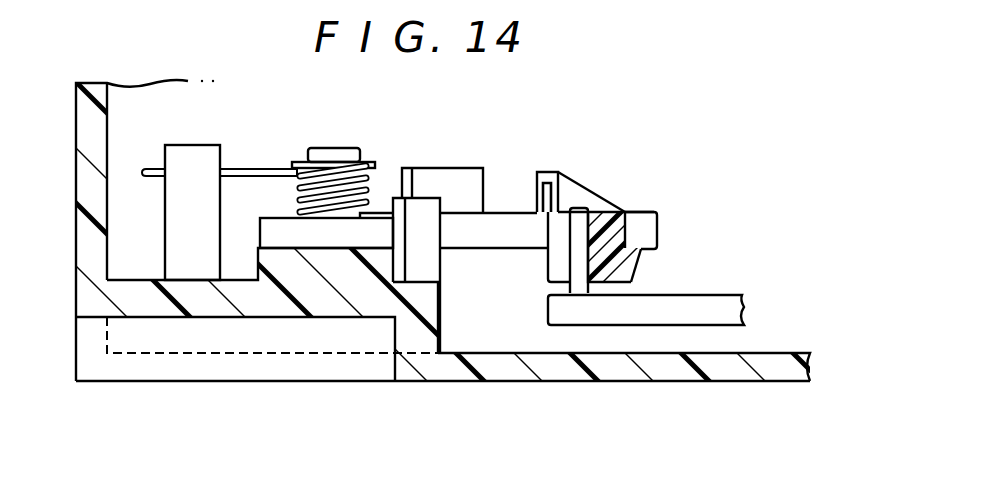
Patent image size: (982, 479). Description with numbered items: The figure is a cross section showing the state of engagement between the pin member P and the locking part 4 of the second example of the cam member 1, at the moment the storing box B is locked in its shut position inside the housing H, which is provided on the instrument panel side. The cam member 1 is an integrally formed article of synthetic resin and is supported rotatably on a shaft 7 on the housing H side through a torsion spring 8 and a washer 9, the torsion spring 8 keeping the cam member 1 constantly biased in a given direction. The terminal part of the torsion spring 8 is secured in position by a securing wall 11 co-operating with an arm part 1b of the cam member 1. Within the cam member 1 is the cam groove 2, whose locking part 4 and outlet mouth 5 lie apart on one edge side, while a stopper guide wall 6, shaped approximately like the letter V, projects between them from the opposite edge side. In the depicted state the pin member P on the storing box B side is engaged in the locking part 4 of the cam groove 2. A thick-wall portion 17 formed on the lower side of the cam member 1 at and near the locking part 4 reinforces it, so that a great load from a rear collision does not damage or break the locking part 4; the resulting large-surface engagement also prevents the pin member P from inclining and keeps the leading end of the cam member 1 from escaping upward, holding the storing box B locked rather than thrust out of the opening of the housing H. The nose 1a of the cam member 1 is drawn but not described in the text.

The cam member 1 is at (645, 212).
The nose portion of housing 1a is at (643, 228).
The arm part 1b is at (442, 183).
The cam groove 2 is at (553, 248).
The locking part 4 is at (602, 217).
The outlet mouth 5 is at (545, 172).
The stopper guide wall 6 is at (513, 232).
The shaft 7 is at (337, 148).
The torsion spring 8 is at (336, 195).
The washer 9 is at (293, 165).
The securing wall 11 is at (187, 158).
The thick-wall portion 17 is at (612, 263).
The pin member P is at (580, 207).
The storing box B is at (720, 311).
The housing H is at (558, 368).